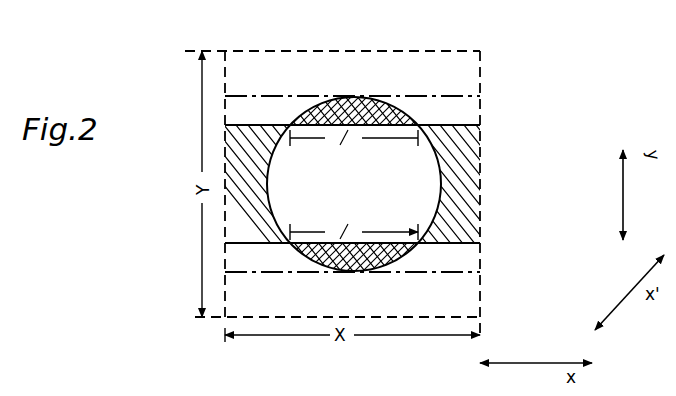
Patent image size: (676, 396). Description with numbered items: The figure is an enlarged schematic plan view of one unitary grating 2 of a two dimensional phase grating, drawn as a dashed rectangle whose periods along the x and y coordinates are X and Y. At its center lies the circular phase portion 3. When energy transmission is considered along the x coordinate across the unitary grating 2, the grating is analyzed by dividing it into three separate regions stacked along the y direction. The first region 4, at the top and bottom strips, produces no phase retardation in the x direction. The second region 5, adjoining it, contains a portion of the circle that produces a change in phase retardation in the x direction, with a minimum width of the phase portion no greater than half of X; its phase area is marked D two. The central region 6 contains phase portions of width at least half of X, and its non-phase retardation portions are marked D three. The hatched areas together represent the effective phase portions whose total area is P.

The unitary grating 2 is at (450, 62).
The central circular phase portion 3 is at (306, 158).
The first region 4 is at (342, 63).
The second region 5 is at (390, 107).
The third region 6 is at (278, 192).